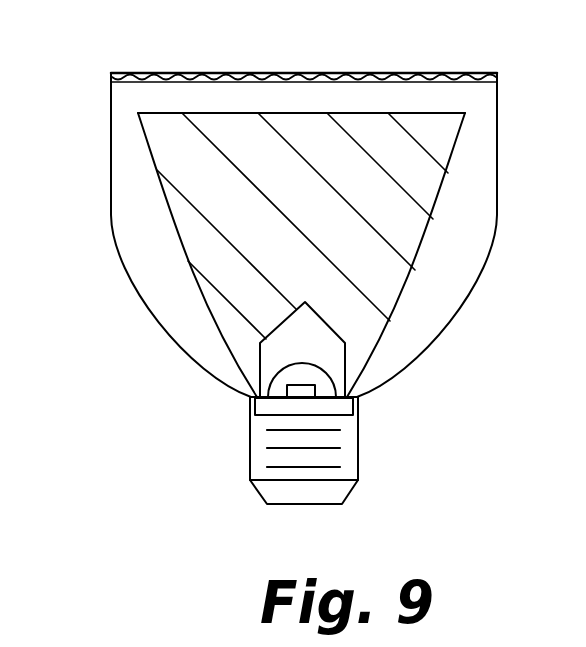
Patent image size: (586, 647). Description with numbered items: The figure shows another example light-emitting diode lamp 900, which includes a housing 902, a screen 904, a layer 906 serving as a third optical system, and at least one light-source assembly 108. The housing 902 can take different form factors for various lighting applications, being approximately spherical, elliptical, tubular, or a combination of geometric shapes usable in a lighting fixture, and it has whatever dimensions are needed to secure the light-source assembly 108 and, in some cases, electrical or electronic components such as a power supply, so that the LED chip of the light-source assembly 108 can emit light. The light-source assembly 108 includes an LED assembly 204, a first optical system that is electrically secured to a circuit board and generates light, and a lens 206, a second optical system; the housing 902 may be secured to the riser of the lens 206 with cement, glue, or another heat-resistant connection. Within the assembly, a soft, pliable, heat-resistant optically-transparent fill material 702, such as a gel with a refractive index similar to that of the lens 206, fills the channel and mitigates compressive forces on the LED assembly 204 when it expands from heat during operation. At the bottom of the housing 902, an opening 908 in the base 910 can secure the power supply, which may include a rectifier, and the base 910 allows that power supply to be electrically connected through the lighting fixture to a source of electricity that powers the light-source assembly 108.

The LED lamp 900 is at (80, 44).
The housing 902 is at (483, 272).
The screen 904 is at (428, 73).
The layer 906 is at (472, 82).
The light-source assembly 108 is at (236, 103).
The lens 206 is at (180, 307).
The optically-transparent fill material 702 is at (325, 353).
The LED assembly 204 is at (371, 413).
The opening 908 is at (262, 459).
The base 910 is at (359, 458).